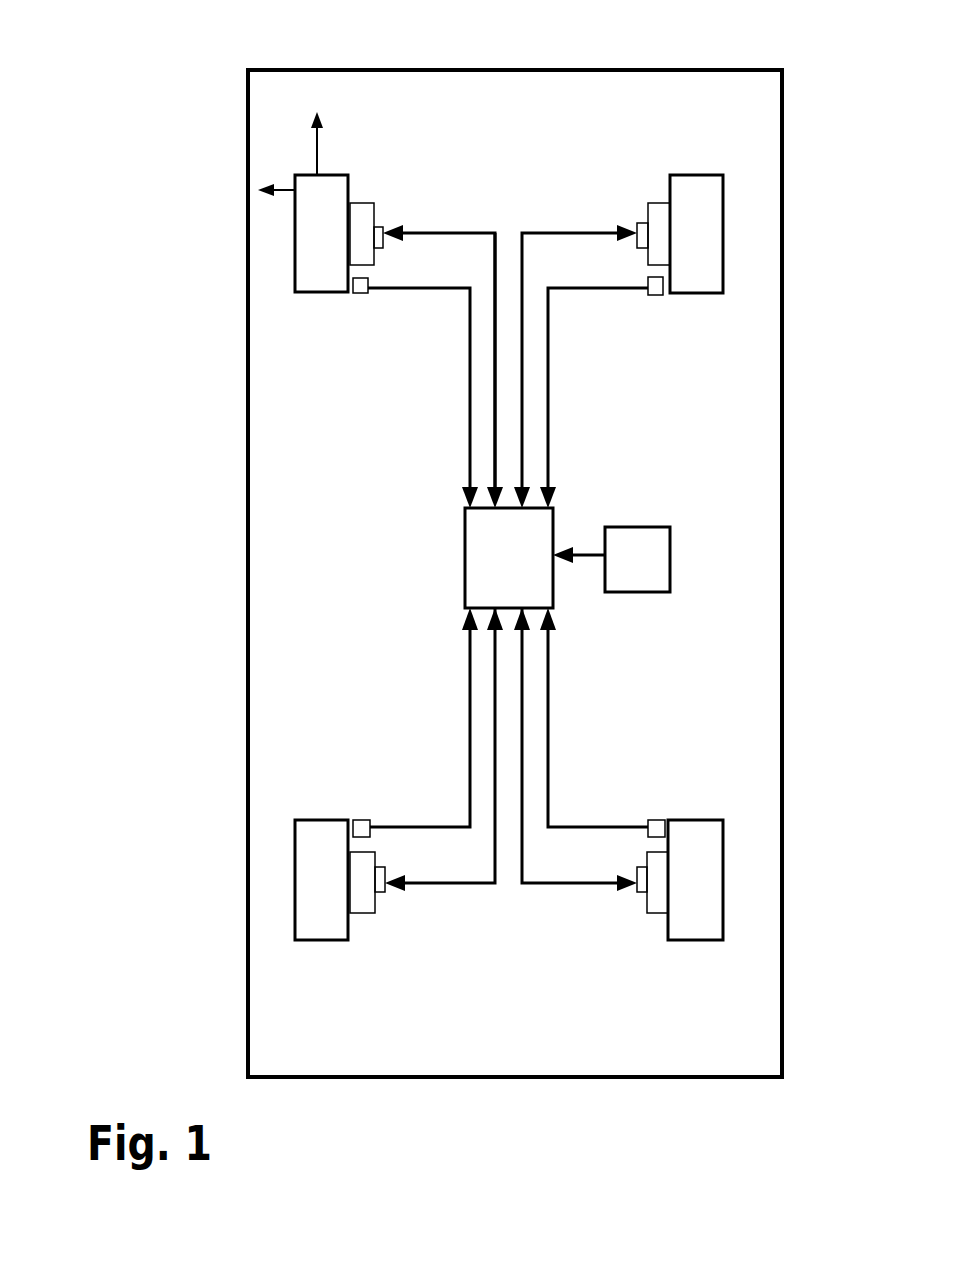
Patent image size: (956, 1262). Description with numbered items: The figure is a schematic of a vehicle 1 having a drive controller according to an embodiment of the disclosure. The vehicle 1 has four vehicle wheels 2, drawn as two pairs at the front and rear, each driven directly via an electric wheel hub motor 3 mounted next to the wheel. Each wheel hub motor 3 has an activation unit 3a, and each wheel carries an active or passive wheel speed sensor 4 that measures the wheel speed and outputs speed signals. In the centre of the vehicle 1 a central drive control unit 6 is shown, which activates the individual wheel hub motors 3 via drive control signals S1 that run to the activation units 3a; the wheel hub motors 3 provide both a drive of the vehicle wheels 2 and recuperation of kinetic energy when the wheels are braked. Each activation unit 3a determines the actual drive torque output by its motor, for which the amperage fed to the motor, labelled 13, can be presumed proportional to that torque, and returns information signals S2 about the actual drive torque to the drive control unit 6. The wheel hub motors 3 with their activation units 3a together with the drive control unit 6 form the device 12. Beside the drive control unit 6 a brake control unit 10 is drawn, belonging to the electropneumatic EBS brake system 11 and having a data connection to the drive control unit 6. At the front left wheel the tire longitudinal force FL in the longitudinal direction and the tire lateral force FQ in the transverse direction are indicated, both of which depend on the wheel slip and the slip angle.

The vehicle 1 is at (248, 103).
The vehicle wheel 2 is at (307, 265).
The wheel hub motor 3 is at (363, 207).
The activation unit of the wheel hub motor 3a is at (383, 226).
The wheel speed sensor 4 is at (360, 293).
The drive control unit 6 is at (465, 556).
The brake control unit 10 is at (642, 538).
The electropneumatic EBS brake system 11 is at (617, 637).
The device 12 is at (410, 600).
The brake system 13 is at (378, 223).
The drive control signals S1 is at (495, 780).
The motor torque information signal S2 is at (520, 462).
The tire longitudinal force FL is at (342, 129).
The tire lateral force FQ is at (278, 187).